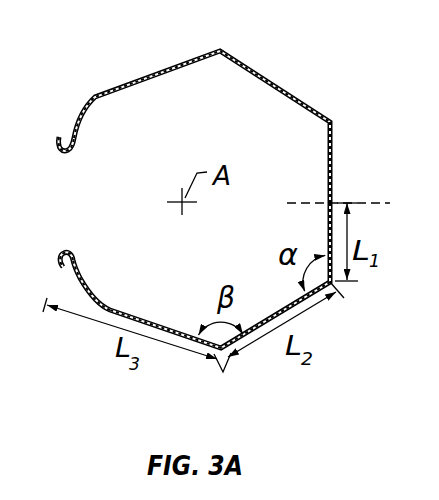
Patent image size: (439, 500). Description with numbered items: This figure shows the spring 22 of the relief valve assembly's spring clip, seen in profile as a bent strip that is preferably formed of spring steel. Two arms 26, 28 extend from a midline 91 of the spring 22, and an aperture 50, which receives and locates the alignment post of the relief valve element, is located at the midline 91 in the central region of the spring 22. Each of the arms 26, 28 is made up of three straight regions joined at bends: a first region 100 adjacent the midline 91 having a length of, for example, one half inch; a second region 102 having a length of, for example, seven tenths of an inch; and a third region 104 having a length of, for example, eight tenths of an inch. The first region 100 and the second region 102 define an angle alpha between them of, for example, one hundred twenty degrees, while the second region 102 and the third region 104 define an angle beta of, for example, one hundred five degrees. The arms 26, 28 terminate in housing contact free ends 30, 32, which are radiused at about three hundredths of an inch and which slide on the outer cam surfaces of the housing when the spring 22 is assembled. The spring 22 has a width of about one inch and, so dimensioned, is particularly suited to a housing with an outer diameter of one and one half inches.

The spring 22 is at (236, 189).
The arm 26 is at (147, 79).
The arm 28 is at (84, 309).
The housing contact free end 30 is at (79, 156).
The housing contact free end 32 is at (80, 249).
The aperture 50 is at (325, 195).
The midline 91 is at (357, 182).
The first region 100 is at (381, 242).
The second region 102 is at (256, 296).
The third region 104 is at (165, 311).